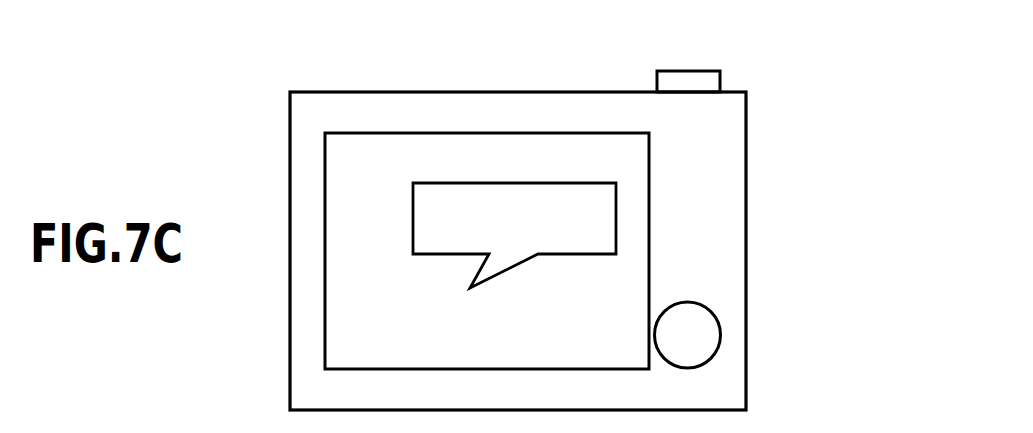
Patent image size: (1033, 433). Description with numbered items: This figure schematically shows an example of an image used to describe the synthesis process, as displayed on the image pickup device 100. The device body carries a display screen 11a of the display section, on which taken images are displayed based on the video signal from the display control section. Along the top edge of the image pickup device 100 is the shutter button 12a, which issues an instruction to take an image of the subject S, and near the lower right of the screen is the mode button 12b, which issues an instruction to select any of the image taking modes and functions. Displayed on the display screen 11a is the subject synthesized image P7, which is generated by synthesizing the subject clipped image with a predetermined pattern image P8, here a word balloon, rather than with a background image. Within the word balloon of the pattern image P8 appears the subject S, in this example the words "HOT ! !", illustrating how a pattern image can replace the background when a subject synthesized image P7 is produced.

The image pickup device 100 is at (531, 66).
The shutter button 12a is at (688, 71).
The display screen 11a is at (524, 251).
The mode button 12b is at (717, 314).
The pattern image P8 is at (417, 163).
The subject synthesized image P7 is at (316, 251).
The subject S is at (471, 196).